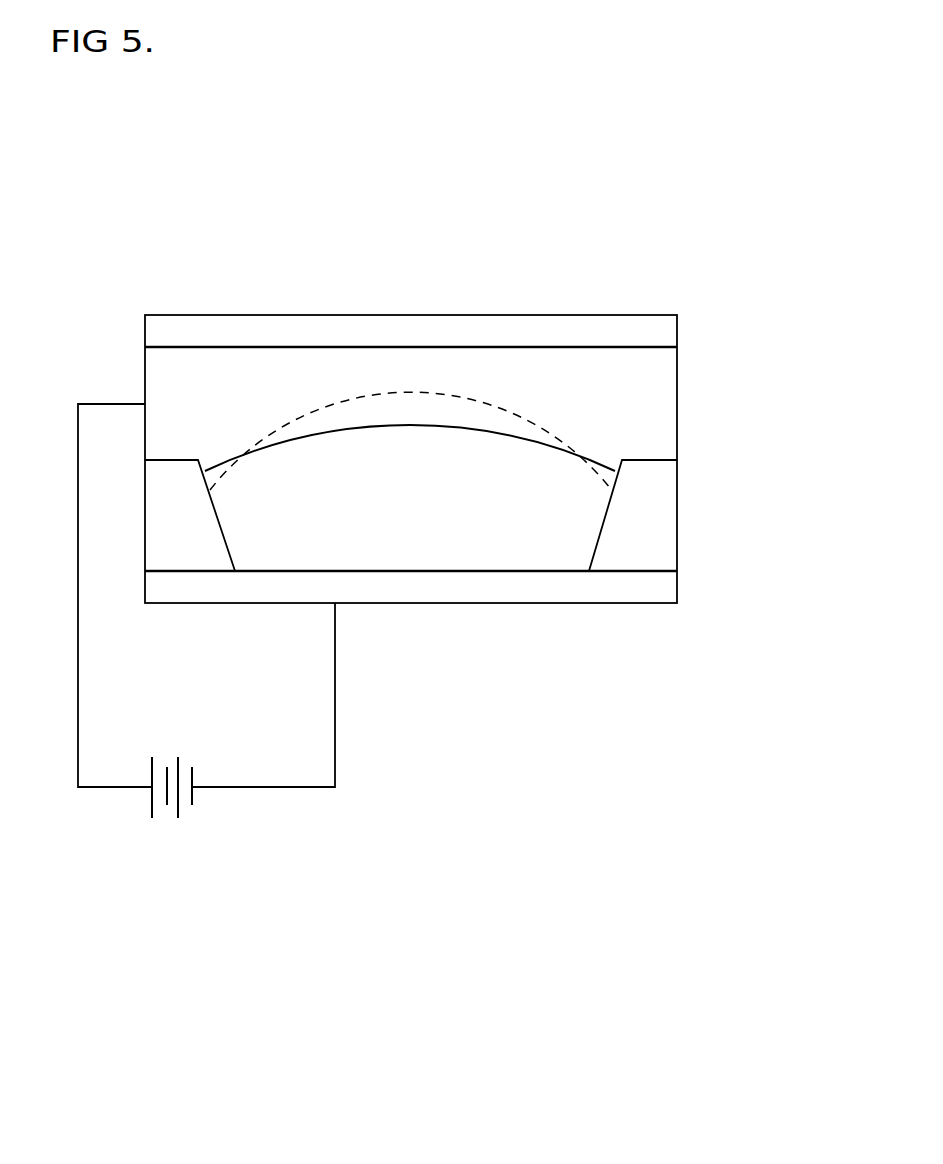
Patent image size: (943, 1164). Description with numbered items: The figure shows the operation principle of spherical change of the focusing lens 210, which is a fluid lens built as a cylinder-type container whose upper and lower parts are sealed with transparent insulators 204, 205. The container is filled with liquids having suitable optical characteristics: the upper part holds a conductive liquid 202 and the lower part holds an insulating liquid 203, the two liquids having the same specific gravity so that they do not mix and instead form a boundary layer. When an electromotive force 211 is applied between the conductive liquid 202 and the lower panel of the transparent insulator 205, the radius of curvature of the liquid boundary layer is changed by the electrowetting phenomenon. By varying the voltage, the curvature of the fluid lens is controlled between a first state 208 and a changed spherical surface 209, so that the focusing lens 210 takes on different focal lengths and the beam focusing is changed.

The conductive liquid 202 is at (202, 315).
The second liquid 203 is at (565, 528).
The transparent insulator 204 is at (345, 315).
The transparent insulator 205 is at (653, 585).
The radius of curvature of the fluid lens 208 is at (462, 430).
The changed spherical surface of the fluid lens 209 is at (468, 397).
The focusing lens 210 is at (677, 398).
The electromotive force 211 is at (173, 828).